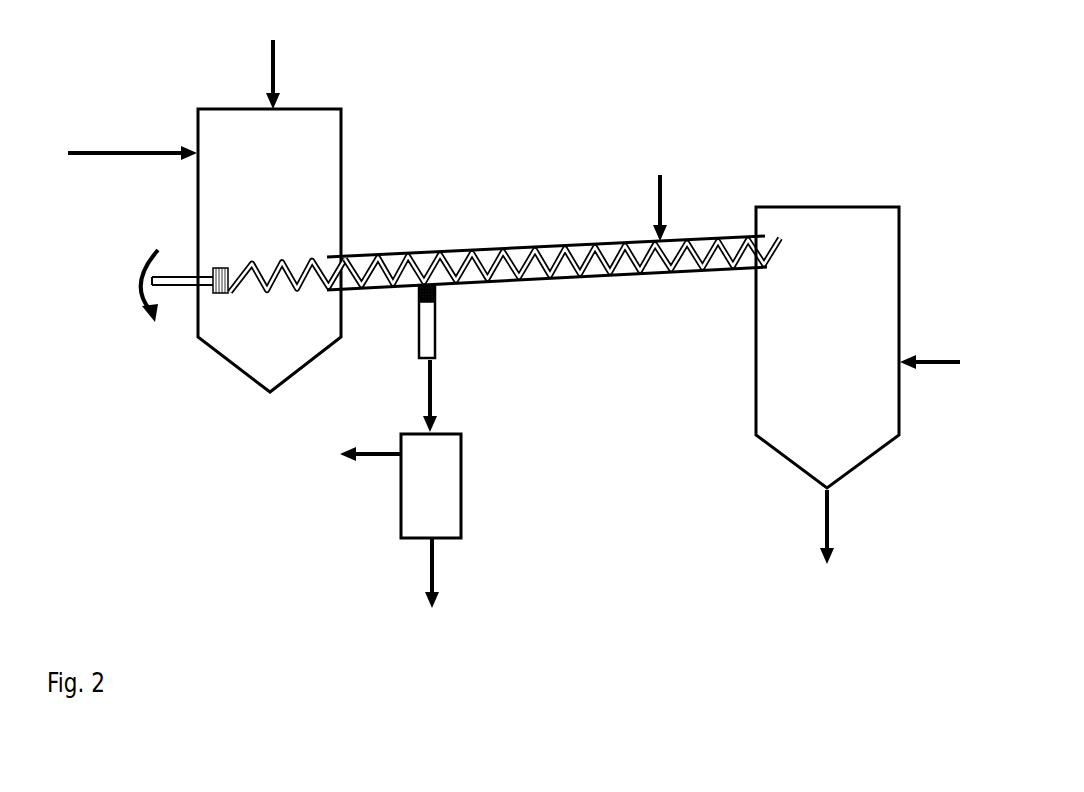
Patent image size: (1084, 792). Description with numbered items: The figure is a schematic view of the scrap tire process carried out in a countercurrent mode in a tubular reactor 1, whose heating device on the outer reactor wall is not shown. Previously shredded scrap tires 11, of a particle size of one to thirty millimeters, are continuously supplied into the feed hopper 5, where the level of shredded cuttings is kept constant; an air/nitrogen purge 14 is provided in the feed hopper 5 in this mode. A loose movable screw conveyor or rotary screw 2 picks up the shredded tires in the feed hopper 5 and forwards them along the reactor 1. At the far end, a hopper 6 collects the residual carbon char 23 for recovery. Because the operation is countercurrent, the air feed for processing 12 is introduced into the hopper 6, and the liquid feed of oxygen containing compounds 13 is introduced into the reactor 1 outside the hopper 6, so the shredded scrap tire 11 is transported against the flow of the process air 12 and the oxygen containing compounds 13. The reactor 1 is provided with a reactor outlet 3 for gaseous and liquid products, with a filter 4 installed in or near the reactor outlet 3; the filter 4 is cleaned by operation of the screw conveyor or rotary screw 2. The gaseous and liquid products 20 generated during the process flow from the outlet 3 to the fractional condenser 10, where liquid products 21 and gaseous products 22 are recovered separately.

The reactor 1 is at (485, 248).
The loose movable screw conveyor or rotary screw 2 is at (272, 287).
The reactor outlet for gaseous and liquid products 3 is at (415, 340).
The filter 4 is at (433, 303).
The feed hopper 5 is at (268, 250).
The hopper for residual carbon char 6 is at (845, 347).
The fractional condenser 10 is at (462, 486).
The feed of shredded scrap tires 11 is at (132, 124).
The air feed for processing 12 is at (930, 338).
The liquid feed of oxygen containing compound(s) 13 is at (685, 208).
The air/nitrogen purge 14 is at (298, 70).
The gaseous and liquid products 20 is at (406, 396).
The liquid products 21 is at (407, 576).
The gaseous products 22 is at (344, 455).
The residual carbon char 23 is at (831, 551).